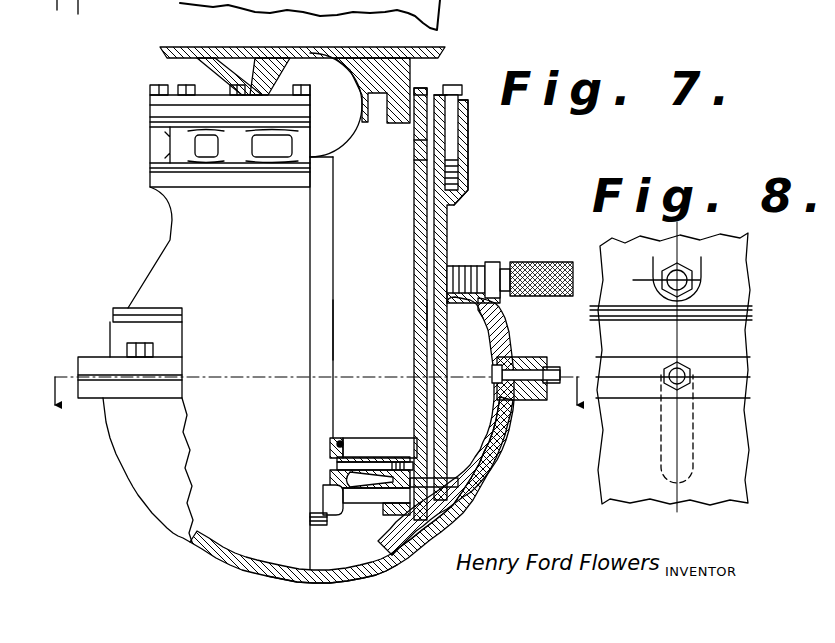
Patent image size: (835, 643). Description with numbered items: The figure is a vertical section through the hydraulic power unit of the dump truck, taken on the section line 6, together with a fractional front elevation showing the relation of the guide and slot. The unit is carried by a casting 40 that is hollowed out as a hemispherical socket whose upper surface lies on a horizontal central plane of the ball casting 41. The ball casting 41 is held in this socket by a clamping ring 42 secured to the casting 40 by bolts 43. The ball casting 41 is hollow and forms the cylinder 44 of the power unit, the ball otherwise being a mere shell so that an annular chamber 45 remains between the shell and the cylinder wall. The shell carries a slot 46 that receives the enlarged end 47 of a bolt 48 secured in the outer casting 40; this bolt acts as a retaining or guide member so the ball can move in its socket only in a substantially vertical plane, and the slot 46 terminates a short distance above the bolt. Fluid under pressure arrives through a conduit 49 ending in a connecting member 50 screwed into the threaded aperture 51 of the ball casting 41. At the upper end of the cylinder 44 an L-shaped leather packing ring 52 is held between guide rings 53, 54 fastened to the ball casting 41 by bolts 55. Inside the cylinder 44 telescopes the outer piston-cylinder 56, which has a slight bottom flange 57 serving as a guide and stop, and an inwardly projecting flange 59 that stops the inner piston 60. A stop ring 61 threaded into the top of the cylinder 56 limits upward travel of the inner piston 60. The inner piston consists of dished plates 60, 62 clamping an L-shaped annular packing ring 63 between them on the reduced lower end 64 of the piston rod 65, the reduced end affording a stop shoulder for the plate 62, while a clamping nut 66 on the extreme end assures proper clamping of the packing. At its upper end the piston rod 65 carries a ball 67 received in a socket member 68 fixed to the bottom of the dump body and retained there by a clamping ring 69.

In FIG. 7, the section line 6— 6 is at (321, 409).
In FIG. 7, the casting 40 is at (143, 462).
In FIG. 8, the casting 40 is at (671, 367).
In FIG. 7, the ball casting 41 is at (395, 560).
In FIG. 7, the clamping ring 42 is at (117, 335).
In FIG. 7, the bolts 43 is at (143, 345).
In FIG. 7, the cylinder 44 is at (440, 318).
In FIG. 7, the annular chamber 45 is at (480, 413).
In FIG. 7, the slot 46 is at (480, 457).
In FIG. 8, the slot 46 is at (690, 427).
In FIG. 7, the enlarged end of bolt 47 is at (492, 367).
In FIG. 8, the enlarged end of bolt 47 is at (687, 382).
In FIG. 7, the bolt 48 is at (543, 361).
In FIG. 7, the conduit 49 is at (544, 295).
In FIG. 7, the connecting member 50 is at (490, 273).
In FIG. 8, the connecting member 50 is at (700, 282).
In FIG. 7, the threaded aperture 51 is at (450, 267).
In FIG. 7, the packing ring 52 is at (417, 153).
In FIG. 7, the guide ring 53 is at (462, 135).
In FIG. 7, the guide ring 54 is at (467, 97).
In FIG. 7, the bolts 55 is at (453, 92).
In FIG. 7, the outer piston-cylinder 56 is at (417, 213).
In FIG. 7, the flange 57 is at (430, 497).
In FIG. 7, the inwardly projecting flange 59 is at (407, 517).
In FIG. 7, the dished plate 60 is at (340, 437).
In FIG. 7, the stop ring 61 is at (415, 88).
In FIG. 7, the dished plate 62 is at (343, 472).
In FIG. 7, the annular packing ring 63 is at (310, 480).
In FIG. 7, the lower end of piston rod 64 is at (322, 453).
In FIG. 7, the piston rod 65 is at (322, 328).
In FIG. 7, the clamping nut 66 is at (317, 500).
In FIG. 7, the ball 67 is at (320, 77).
In FIG. 7, the socket member 68 is at (165, 50).
In FIG. 7, the clamping ring 69 is at (370, 123).